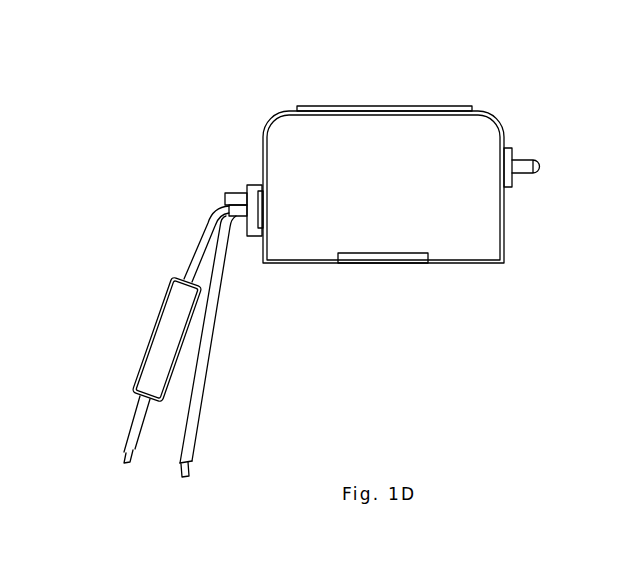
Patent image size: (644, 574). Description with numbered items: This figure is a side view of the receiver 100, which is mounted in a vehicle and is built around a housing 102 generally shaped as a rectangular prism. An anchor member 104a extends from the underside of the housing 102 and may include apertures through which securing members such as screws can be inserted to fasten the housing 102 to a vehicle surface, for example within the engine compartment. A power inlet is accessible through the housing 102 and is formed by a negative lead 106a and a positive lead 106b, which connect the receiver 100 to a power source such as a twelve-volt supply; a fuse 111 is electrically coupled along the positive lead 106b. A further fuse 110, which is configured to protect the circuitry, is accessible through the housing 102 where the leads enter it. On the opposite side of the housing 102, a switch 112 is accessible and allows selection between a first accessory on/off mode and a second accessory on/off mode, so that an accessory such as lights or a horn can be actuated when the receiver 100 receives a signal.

The receiver 100 is at (305, 80).
The housing 102 is at (425, 137).
The anchor member 104a is at (390, 258).
The negative lead 106a is at (192, 438).
The positive lead 106b is at (137, 430).
The fuse 110 is at (238, 198).
The fuse 111 is at (165, 343).
The switch 112 is at (543, 158).